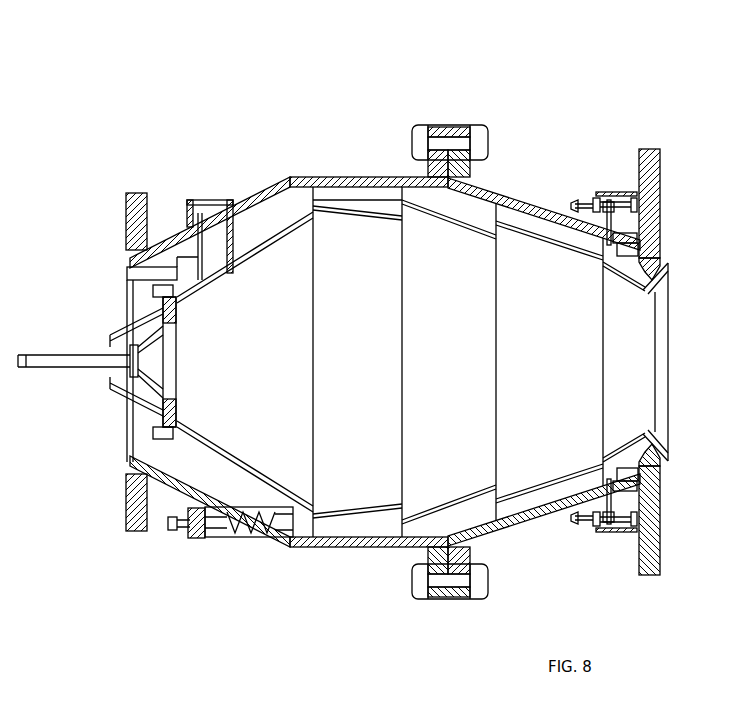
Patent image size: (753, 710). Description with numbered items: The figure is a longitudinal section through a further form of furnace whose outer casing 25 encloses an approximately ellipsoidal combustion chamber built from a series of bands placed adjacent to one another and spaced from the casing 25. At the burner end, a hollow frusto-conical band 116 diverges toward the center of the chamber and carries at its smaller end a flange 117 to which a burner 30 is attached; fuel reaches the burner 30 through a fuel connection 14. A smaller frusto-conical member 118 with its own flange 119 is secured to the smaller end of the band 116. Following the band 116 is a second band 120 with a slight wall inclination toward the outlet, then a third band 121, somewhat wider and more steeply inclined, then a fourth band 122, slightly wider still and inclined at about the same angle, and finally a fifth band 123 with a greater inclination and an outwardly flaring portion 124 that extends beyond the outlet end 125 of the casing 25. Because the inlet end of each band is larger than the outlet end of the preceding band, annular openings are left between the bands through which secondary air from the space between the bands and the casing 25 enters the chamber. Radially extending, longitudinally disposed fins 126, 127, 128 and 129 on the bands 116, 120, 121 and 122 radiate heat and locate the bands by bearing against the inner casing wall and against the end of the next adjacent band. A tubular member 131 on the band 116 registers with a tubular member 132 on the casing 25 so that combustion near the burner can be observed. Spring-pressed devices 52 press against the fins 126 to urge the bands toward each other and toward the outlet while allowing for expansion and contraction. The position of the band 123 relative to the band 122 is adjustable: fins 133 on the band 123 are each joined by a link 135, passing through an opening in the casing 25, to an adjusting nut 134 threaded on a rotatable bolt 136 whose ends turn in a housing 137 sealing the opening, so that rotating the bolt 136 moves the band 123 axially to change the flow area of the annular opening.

The fuel connection 14 is at (30, 355).
The outer casing 25 is at (355, 196).
The burner 30 is at (170, 345).
The spring-pressed device 52 is at (232, 537).
The band 116 is at (288, 228).
The flange 117 is at (114, 393).
The frusto-conical member 118 is at (115, 327).
The flange 119 is at (130, 348).
The second band 120 is at (395, 193).
The third band 121 is at (414, 133).
The fourth band 122 is at (531, 233).
The fifth band 123 is at (656, 292).
The outwardly flaring portion 124 is at (655, 278).
The outlet end of the furnace casing 125 is at (660, 150).
The fins 126 is at (263, 223).
The fins 127 is at (375, 207).
The fins 128 is at (470, 207).
The fins 129 is at (512, 218).
The tubular member 131 is at (232, 240).
The tubular member 132 is at (184, 207).
The fins 133 is at (625, 243).
The adjusting nut 134 is at (609, 200).
The link 135 is at (637, 215).
The rotatable bolt 136 is at (623, 193).
The housing 137 is at (599, 192).